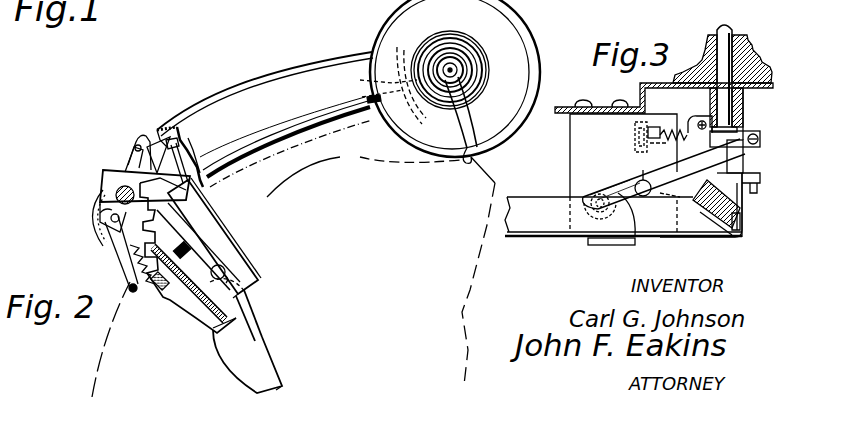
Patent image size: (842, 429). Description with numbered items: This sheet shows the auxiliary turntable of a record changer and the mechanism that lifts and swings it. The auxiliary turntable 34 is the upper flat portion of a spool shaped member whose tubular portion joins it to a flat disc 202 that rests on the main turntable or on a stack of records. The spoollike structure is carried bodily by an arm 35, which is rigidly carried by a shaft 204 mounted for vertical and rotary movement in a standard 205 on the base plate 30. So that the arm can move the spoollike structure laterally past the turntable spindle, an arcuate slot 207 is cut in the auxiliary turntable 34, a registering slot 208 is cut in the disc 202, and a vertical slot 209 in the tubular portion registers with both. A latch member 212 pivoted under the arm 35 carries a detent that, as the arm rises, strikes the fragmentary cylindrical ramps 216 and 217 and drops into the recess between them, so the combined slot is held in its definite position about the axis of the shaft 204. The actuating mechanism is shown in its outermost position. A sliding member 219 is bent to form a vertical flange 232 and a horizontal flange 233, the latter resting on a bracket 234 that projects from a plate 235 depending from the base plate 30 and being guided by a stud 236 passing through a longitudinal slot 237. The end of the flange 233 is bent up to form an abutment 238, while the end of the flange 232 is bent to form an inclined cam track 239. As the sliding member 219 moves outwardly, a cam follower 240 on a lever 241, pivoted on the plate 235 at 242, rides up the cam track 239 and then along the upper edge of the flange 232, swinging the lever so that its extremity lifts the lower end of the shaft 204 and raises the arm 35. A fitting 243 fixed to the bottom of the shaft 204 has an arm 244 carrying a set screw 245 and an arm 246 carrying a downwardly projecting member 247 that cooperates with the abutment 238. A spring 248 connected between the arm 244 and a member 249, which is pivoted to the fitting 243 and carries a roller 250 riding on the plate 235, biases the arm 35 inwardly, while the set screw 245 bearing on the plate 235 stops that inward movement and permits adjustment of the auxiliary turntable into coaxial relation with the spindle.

In FIG. 3, the base plate 30 is at (608, 106).
In FIG. 2, the auxiliary turntable 34 is at (508, 51).
In FIG. 2, the arm 35 is at (279, 116).
In FIG. 2, the flat disc 202 is at (393, 141).
In FIG. 2, the shaft 204 is at (105, 186).
In FIG. 3, the shaft 204 is at (733, 27).
In FIG. 3, the standard 205 is at (705, 58).
In FIG. 2, the arcuate slot 207 is at (470, 105).
In FIG. 2, the registering slot 208 is at (460, 168).
In FIG. 2, the vertical slot 209 is at (460, 73).
In FIG. 2, the latch member 212 is at (336, 137).
In FIG. 2, the fragmentary cylindrical ramp 216 is at (375, 84).
In FIG. 2, the fragmentary cylindrical ramp 217 is at (415, 117).
In FIG. 2, the sliding member 219 is at (271, 357).
In FIG. 3, the sliding member 219 is at (522, 238).
In FIG. 2, the vertical flange 232 is at (252, 318).
In FIG. 3, the vertical flange 232 is at (544, 224).
In FIG. 2, the horizontal flange 233 is at (224, 263).
In FIG. 3, the bracket 234 is at (618, 246).
In FIG. 2, the plate 235 is at (220, 317).
In FIG. 3, the plate 235 is at (598, 148).
In FIG. 2, the stud 236 is at (228, 268).
In FIG. 2, the longitudinal slot 237 is at (208, 252).
In FIG. 2, the abutment 238 is at (145, 137).
In FIG. 3, the abutment 238 is at (737, 236).
In FIG. 2, the cam track 239 is at (178, 199).
In FIG. 3, the cam track 239 is at (674, 208).
In FIG. 2, the cam follower 240 is at (168, 244).
In FIG. 3, the cam follower 240 is at (643, 180).
In FIG. 2, the lever 241 is at (240, 298).
In FIG. 3, the lever 241 is at (640, 239).
In FIG. 2, the pivot 242 is at (236, 300).
In FIG. 3, the pivot 242 is at (581, 195).
In FIG. 2, the fitting 243 is at (112, 177).
In FIG. 3, the fitting 243 is at (758, 144).
In FIG. 2, the arm 244 is at (189, 193).
In FIG. 3, the arm 244 is at (747, 116).
In FIG. 2, the set screw 245 is at (180, 126).
In FIG. 3, the set screw 245 is at (747, 101).
In FIG. 3, the arm 246 is at (718, 218).
In FIG. 2, the downwardly projecting member 247 is at (134, 145).
In FIG. 3, the downwardly projecting member 247 is at (740, 222).
In FIG. 2, the spring 248 is at (140, 293).
In FIG. 3, the spring 248 is at (692, 124).
In FIG. 2, the member 249 is at (125, 252).
In FIG. 3, the member 249 is at (640, 160).
In FIG. 2, the roller 250 is at (150, 286).
In FIG. 3, the roller 250 is at (643, 130).